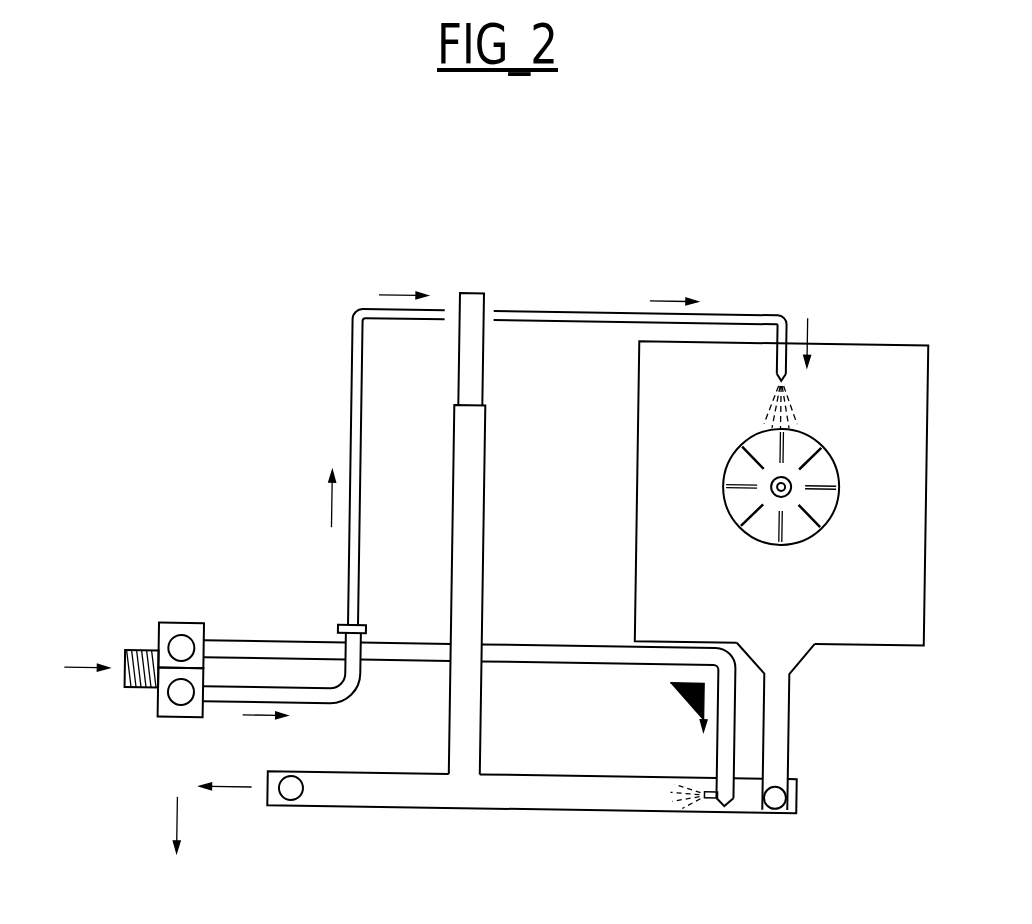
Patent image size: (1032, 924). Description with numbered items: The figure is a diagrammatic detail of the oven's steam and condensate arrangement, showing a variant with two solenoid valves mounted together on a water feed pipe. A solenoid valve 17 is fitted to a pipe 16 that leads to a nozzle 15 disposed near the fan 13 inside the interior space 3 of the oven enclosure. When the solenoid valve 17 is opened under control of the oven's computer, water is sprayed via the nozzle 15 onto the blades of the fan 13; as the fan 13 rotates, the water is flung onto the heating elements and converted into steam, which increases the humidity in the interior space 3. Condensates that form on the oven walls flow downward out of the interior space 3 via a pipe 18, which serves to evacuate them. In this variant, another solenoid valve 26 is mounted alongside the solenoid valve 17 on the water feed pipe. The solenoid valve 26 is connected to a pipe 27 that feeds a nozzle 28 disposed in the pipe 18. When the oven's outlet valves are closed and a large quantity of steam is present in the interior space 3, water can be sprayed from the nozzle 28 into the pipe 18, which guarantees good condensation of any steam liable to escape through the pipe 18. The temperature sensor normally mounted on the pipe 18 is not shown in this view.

The interior space 3 is at (671, 598).
The fan 13 is at (830, 510).
The nozzle 15 is at (782, 371).
The pipe 16 is at (556, 311).
The solenoid valve 17 is at (170, 722).
The pipe 18 is at (792, 718).
The solenoid valve 26 is at (169, 628).
The pipe 27 is at (514, 652).
The nozzle 28 is at (708, 794).